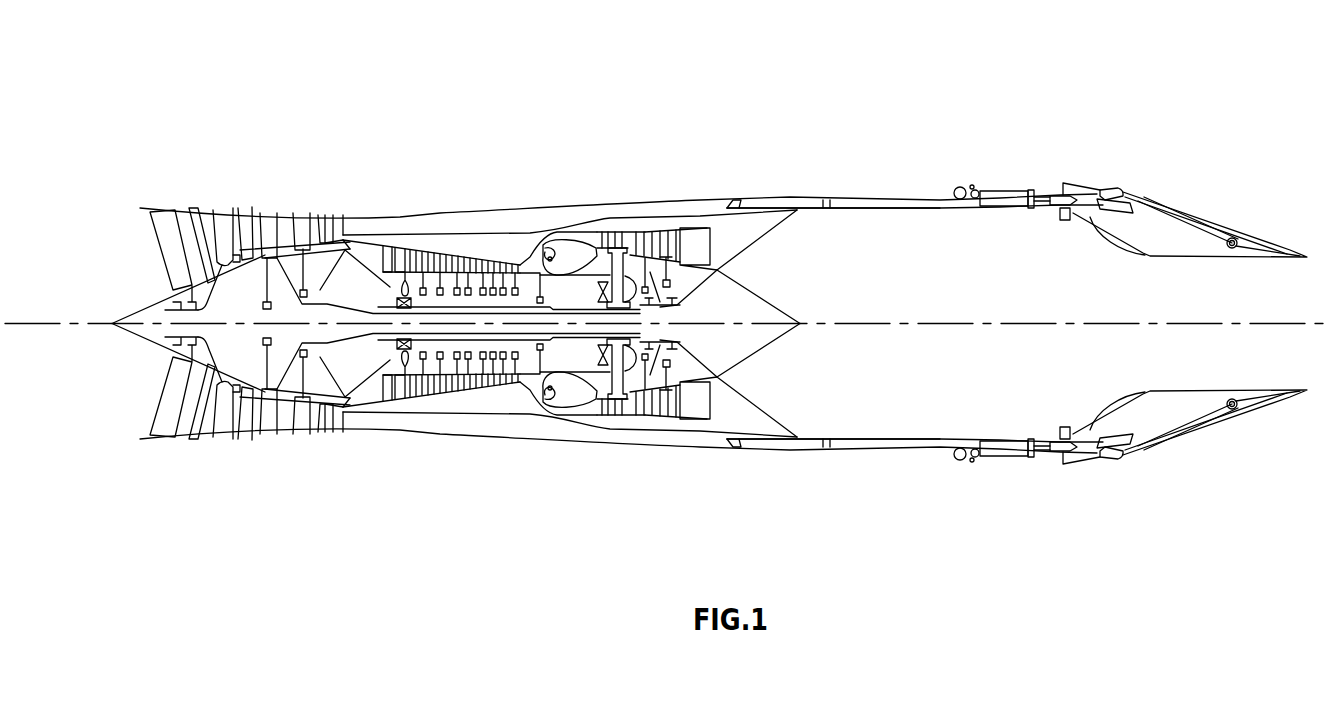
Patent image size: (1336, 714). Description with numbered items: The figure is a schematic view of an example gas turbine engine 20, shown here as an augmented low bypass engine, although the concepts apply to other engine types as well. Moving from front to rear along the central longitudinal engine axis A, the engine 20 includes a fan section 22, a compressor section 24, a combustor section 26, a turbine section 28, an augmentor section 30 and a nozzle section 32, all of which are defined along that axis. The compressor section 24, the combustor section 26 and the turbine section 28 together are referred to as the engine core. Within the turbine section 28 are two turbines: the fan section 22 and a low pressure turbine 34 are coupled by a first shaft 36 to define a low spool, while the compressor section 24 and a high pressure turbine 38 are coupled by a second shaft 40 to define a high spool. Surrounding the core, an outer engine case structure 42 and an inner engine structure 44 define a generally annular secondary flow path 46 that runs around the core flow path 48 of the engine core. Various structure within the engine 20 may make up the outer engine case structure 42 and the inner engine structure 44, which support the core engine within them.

The gas turbine engine 20 is at (996, 104).
The fan section 22 is at (249, 468).
The compressor section 24 is at (446, 460).
The combustor section 26 is at (574, 464).
The turbine section 28 is at (664, 472).
The augmentor section 30 is at (779, 481).
The nozzle section 32 is at (1161, 499).
The low pressure turbine 34 is at (646, 405).
The first shaft 36 is at (338, 352).
The high pressure turbine 38 is at (617, 402).
The second shaft 40 is at (547, 398).
The outer engine case structure 42 is at (360, 432).
The inner engine structure 44 is at (480, 399).
The secondary flow path 46 is at (413, 427).
The core flow path 48 is at (347, 415).
The central longitudinal engine axis A is at (1280, 323).